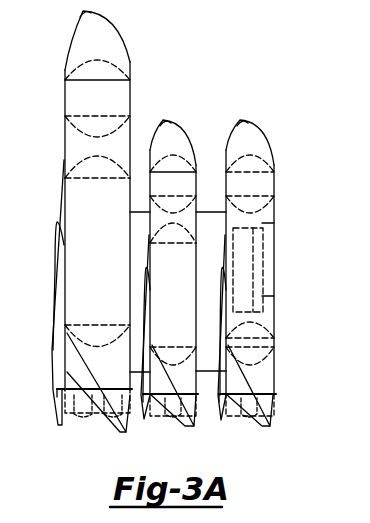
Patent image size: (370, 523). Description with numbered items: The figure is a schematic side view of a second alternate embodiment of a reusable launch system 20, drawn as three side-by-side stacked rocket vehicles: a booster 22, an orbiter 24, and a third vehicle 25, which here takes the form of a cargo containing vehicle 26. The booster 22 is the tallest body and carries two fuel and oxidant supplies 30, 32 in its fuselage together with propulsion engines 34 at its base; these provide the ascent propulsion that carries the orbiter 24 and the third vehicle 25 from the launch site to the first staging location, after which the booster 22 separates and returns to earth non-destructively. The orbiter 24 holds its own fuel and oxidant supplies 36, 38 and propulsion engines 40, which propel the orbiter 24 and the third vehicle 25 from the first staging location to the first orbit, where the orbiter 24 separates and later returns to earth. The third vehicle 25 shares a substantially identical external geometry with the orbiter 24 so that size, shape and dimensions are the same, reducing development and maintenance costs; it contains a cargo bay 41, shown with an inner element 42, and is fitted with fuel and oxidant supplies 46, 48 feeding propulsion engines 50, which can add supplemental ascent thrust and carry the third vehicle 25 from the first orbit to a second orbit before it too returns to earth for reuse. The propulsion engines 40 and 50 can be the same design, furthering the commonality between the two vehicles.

The reusable launch system 20 is at (303, 130).
The booster 22 is at (85, 40).
The orbiter 24 is at (184, 148).
The cargo containing vehicle 26 is at (247, 142).
The third vehicle 25 is at (274, 223).
The fuel and oxidant supply 30 is at (82, 193).
The fuel and oxidant supply 32 is at (85, 97).
The propulsion engines 34 is at (97, 423).
The fuel and oxidant supply 36 is at (163, 287).
The fuel and oxidant supply 38 is at (168, 183).
The propulsion engines 40 is at (168, 410).
The cargo bay 41 is at (262, 258).
The payload 42 is at (262, 296).
The fuel and oxidant supply 46 is at (262, 343).
The fuel and oxidant supply 48 is at (258, 183).
The propulsion engines 50 is at (243, 416).